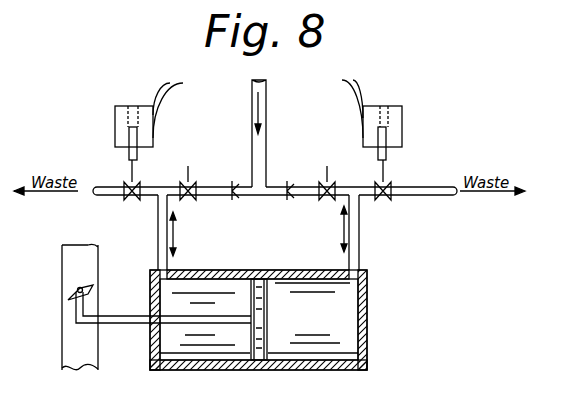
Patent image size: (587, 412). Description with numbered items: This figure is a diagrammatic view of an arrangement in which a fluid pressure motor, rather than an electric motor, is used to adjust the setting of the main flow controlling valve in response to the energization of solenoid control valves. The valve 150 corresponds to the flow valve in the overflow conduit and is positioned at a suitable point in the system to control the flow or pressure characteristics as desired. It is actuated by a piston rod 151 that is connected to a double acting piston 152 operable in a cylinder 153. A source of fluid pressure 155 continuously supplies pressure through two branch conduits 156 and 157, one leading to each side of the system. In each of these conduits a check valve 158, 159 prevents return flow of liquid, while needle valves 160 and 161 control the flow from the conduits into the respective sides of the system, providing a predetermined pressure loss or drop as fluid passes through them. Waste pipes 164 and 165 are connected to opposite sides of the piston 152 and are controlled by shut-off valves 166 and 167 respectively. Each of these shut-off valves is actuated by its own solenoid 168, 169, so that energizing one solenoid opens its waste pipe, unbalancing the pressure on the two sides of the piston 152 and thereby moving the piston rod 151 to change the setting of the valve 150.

The valve 150 is at (75, 290).
The piston rod 151 is at (145, 324).
The double acting piston 152 is at (259, 361).
The cylinder 153 is at (168, 371).
The source of fluid pressure 155 is at (265, 90).
The branch conduit 156 is at (212, 186).
The branch conduit 157 is at (312, 158).
The check valve 158 is at (234, 200).
The check valve 159 is at (288, 200).
The needle valve 160 is at (190, 181).
The needle valve 161 is at (328, 180).
The waste pipe 164 is at (97, 197).
The waste pipe 165 is at (432, 186).
The shut-off valve 166 is at (132, 201).
The shut-off valve 167 is at (384, 201).
The solenoid 168 is at (115, 130).
The solenoid 169 is at (402, 122).